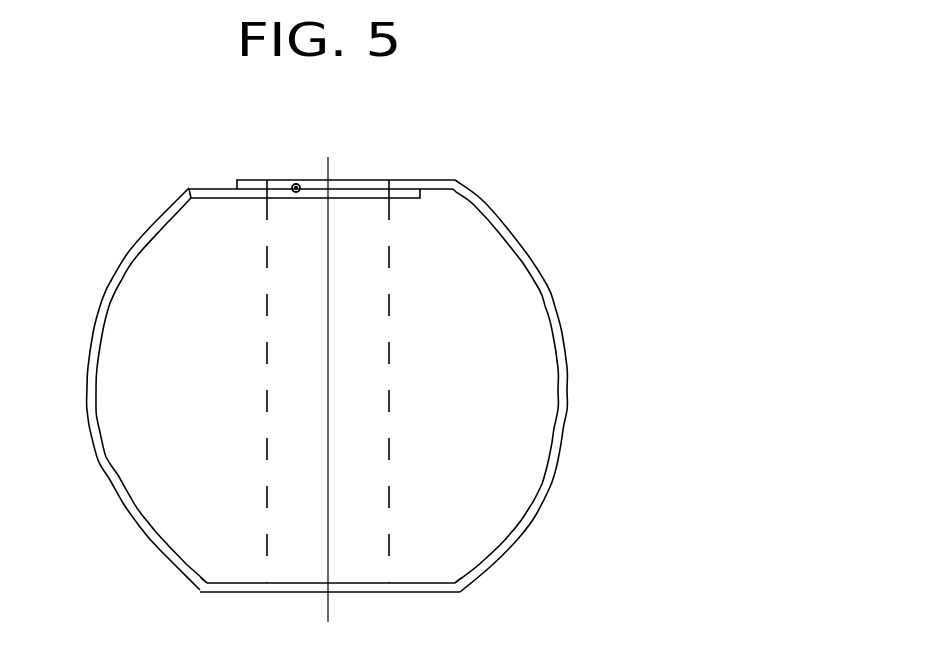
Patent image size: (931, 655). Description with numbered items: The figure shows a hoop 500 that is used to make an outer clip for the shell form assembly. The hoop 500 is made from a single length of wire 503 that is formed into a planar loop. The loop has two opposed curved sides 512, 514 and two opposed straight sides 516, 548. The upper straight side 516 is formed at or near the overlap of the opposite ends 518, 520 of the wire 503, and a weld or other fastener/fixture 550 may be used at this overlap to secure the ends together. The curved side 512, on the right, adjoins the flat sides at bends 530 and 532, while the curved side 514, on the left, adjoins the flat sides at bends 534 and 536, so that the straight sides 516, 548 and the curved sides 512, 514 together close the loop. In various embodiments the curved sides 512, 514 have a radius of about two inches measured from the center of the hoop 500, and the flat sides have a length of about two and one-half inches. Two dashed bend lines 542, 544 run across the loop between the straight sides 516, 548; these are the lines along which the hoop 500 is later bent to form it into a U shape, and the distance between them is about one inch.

The hoop 500 is at (684, 284).
The wire 503 is at (110, 480).
The curved side 512 is at (540, 480).
The curved side 514 is at (100, 398).
The straight side 516 is at (205, 189).
The end of the wire 518 is at (372, 195).
The end of the wire 520 is at (440, 181).
The bend 530 is at (455, 195).
The bend 532 is at (453, 583).
The bend 534 is at (204, 579).
The bend 536 is at (188, 197).
The bend line 542 is at (392, 437).
The bend line 544 is at (268, 438).
The straight side 548 is at (410, 590).
The weld or other fastener/fixture 550 is at (297, 186).